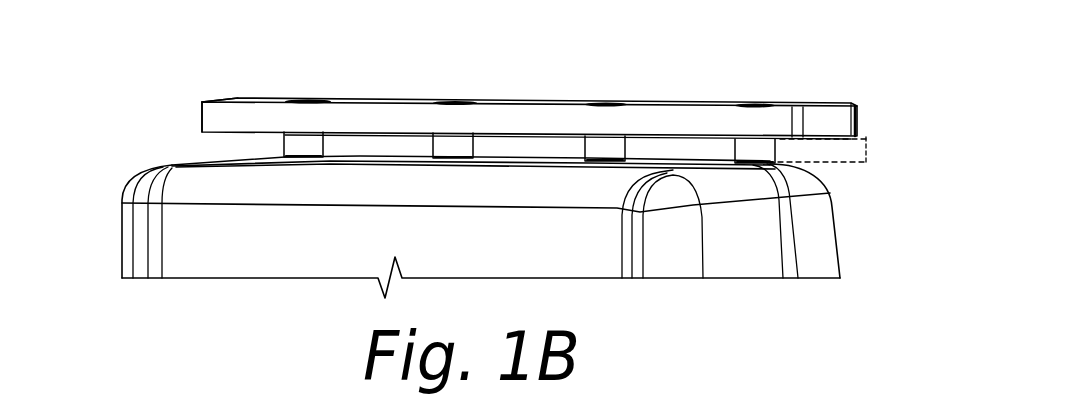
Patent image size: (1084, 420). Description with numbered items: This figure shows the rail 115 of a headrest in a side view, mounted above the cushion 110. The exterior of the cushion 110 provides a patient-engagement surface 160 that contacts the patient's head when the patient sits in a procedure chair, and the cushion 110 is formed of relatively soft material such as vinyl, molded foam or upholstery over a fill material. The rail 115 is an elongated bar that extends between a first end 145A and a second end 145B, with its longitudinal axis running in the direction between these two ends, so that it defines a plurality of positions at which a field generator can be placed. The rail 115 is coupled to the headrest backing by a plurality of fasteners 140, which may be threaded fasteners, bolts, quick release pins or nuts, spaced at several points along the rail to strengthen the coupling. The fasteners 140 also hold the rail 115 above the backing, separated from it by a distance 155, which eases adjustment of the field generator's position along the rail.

The cushion 110 is at (131, 155).
The rail 115 is at (762, 103).
The fasteners 140 is at (445, 145).
The first end 145A is at (200, 108).
The second end 145B is at (847, 123).
The distance 155 is at (866, 150).
The patient-engagement surface 160 is at (270, 265).